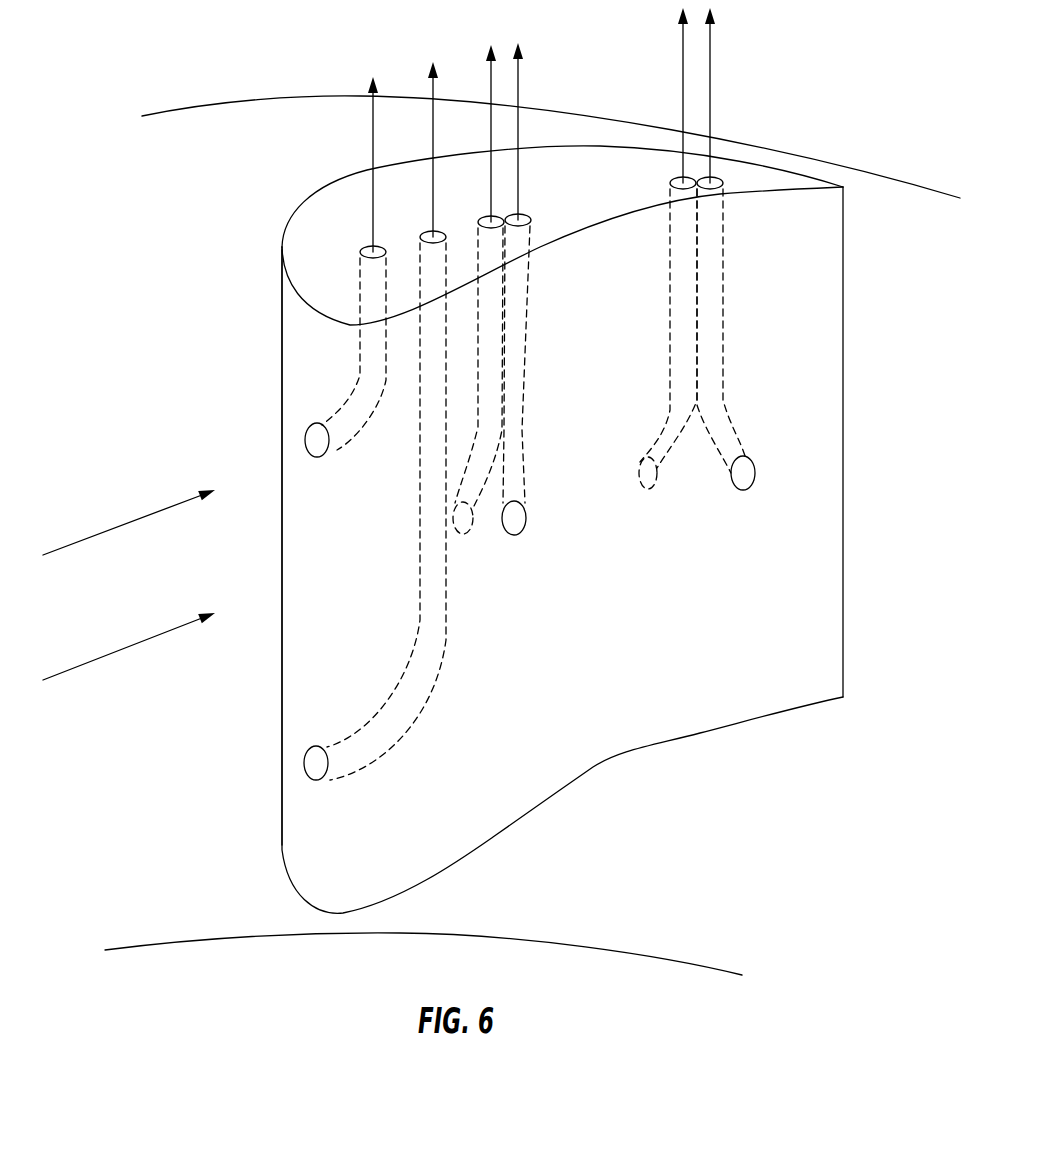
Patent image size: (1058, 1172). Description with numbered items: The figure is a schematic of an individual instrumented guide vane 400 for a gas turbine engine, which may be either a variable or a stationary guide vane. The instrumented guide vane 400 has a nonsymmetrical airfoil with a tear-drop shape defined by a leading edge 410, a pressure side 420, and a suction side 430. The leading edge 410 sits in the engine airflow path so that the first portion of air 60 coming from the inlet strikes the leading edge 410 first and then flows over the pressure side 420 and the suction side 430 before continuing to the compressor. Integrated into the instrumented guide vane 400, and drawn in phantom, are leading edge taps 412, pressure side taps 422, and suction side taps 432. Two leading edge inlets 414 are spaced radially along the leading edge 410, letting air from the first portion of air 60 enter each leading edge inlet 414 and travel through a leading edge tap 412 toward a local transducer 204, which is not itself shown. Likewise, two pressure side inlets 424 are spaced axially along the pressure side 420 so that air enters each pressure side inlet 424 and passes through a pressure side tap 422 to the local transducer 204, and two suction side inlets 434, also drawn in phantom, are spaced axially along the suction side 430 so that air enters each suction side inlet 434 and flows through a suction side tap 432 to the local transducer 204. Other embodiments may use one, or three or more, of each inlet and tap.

The first portion of air 60 is at (60, 650).
The local transducer 204 is at (532, 535).
The instrumented guide vane 400 is at (823, 795).
The leading edge 410 is at (280, 692).
The leading edge tap 412 is at (361, 445).
The leading edge inlet 414 is at (316, 470).
The pressure side 420 is at (577, 240).
The pressure side tap 422 is at (690, 349).
The pressure side inlet 424 is at (740, 515).
The suction side 430 is at (483, 140).
The suction side tap 432 is at (505, 427).
The suction side inlet 434 is at (637, 508).